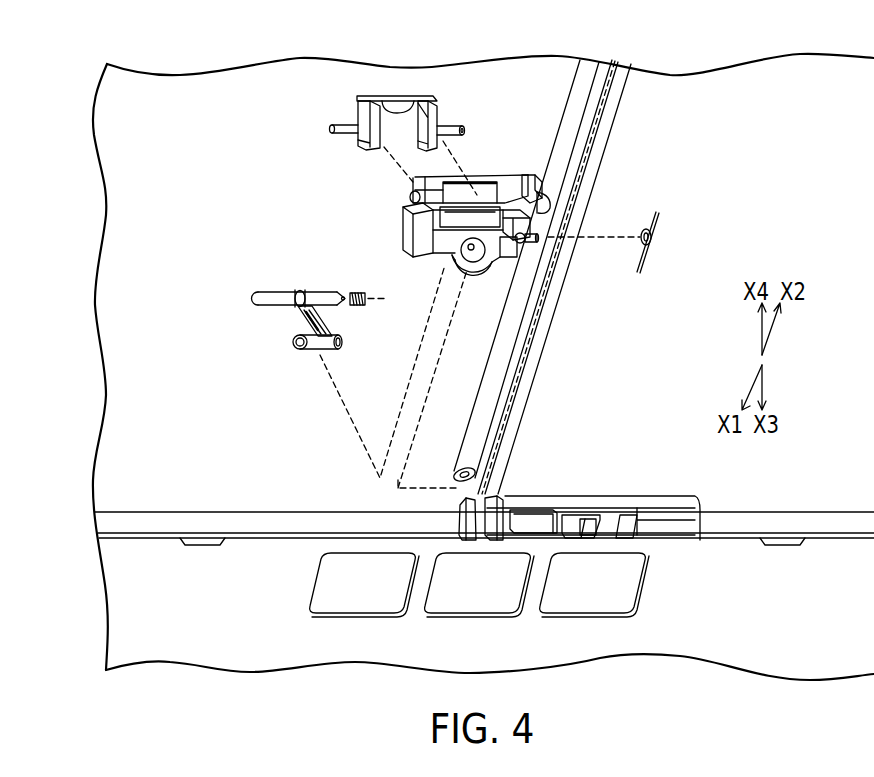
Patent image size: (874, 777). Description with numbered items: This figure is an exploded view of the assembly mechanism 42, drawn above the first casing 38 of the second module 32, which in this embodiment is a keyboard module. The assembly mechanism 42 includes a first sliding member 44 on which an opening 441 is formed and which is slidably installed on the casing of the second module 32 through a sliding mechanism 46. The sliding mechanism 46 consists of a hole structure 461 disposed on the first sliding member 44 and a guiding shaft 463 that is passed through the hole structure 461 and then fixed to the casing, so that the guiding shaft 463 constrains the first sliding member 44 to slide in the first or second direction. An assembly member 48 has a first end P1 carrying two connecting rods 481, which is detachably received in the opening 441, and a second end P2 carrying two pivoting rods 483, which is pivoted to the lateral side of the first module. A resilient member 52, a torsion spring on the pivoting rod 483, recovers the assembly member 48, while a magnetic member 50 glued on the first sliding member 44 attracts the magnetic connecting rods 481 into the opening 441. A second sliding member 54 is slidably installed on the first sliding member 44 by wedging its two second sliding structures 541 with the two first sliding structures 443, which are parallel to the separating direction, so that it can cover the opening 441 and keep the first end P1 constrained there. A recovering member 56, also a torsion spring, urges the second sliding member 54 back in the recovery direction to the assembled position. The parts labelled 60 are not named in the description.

The second module 32 is at (194, 644).
The first casing 38 is at (126, 453).
The assembly mechanism 42 is at (244, 178).
The first sliding member 44 is at (432, 193).
The opening 441 is at (435, 257).
The first sliding structure 443 is at (412, 190).
The sliding mechanism 46 is at (549, 277).
The hole structure 461 is at (482, 260).
The guiding shaft 463 is at (500, 345).
The assembly member 48 is at (283, 313).
The connecting rod 481 is at (334, 370).
The pivoting rod 483 is at (266, 291).
The magnetic member 50 is at (480, 196).
The resilient member 52 is at (353, 312).
The second sliding member 54 is at (397, 81).
The second sliding structure 541 is at (358, 99).
The recovering member 56 is at (648, 236).
The stud 60 is at (362, 123).
The first end P1 is at (298, 343).
The second end P2 is at (298, 291).